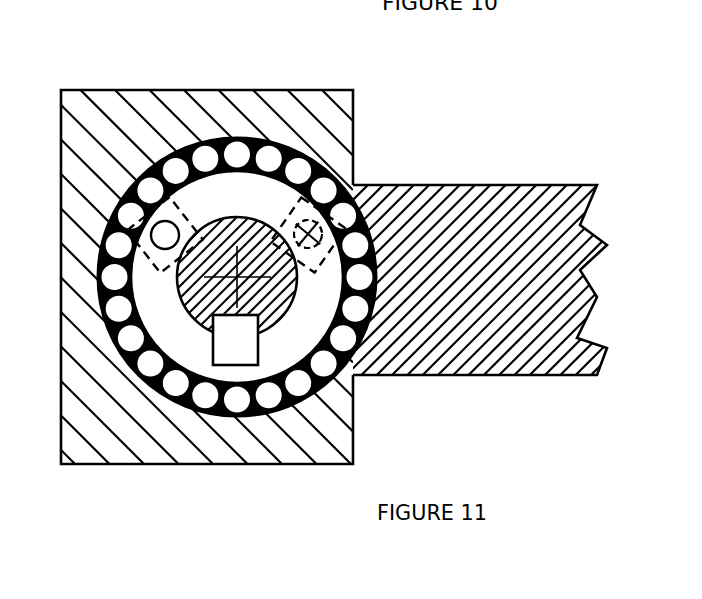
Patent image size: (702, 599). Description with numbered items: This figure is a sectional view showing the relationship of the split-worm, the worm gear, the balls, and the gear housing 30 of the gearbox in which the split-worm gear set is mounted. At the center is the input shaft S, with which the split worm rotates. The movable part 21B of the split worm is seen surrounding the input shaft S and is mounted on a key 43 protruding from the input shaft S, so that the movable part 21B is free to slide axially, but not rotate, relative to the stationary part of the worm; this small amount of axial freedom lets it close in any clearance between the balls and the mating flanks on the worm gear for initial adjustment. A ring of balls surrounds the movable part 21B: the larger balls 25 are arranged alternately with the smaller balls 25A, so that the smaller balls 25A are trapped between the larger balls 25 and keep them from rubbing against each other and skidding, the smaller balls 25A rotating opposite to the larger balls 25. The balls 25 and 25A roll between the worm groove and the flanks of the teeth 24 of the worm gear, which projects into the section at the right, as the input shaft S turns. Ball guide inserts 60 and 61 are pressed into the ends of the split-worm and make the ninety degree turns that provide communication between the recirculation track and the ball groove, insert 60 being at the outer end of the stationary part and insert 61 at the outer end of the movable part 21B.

The gear housing 30 is at (217, 467).
The teeth 24 is at (513, 207).
The movable part 21B is at (237, 188).
The input shaft S is at (268, 303).
The key 43 is at (240, 352).
The smaller balls 25A is at (146, 192).
The ball guide insert 61 is at (165, 221).
The ball guide insert 60 is at (333, 210).
The balls 25 is at (165, 235).